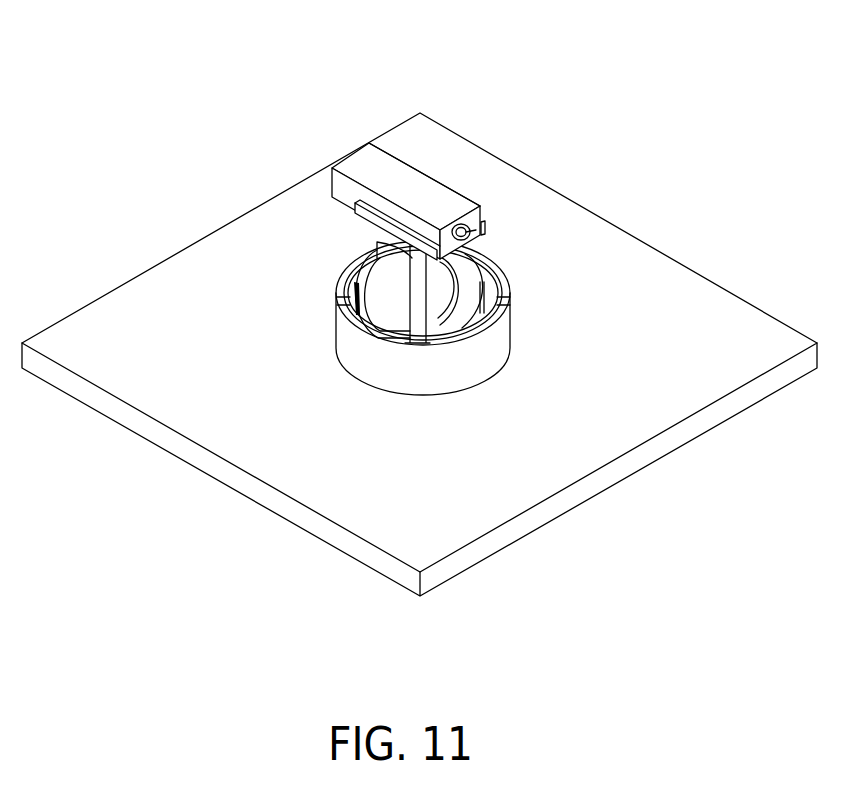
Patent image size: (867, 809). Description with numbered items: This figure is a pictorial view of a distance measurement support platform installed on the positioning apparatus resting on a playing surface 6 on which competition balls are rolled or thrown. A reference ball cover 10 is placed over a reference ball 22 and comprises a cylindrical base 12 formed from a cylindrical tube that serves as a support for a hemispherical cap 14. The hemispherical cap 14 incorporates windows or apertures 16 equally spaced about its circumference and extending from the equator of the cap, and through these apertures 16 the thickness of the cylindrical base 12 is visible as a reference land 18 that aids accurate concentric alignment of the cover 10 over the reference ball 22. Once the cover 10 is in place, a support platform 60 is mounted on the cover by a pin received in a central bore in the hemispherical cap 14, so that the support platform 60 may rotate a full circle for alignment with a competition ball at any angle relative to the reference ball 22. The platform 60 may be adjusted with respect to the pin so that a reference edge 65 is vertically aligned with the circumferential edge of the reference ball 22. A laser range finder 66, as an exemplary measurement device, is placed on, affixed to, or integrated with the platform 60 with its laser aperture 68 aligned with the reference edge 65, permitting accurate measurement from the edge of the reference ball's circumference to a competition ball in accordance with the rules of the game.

The playing surface 6 is at (143, 323).
The reference ball cover 10 is at (519, 277).
The cylindrical base 12 is at (383, 361).
The hemispherical cap 14 is at (428, 263).
The apertures 16 is at (480, 281).
The reference land 18 is at (388, 274).
The reference ball 22 is at (384, 266).
The support platform 60 is at (390, 228).
The reference edge 65 is at (440, 263).
The laser range finder 66 is at (420, 188).
The laser aperture 68 is at (470, 233).